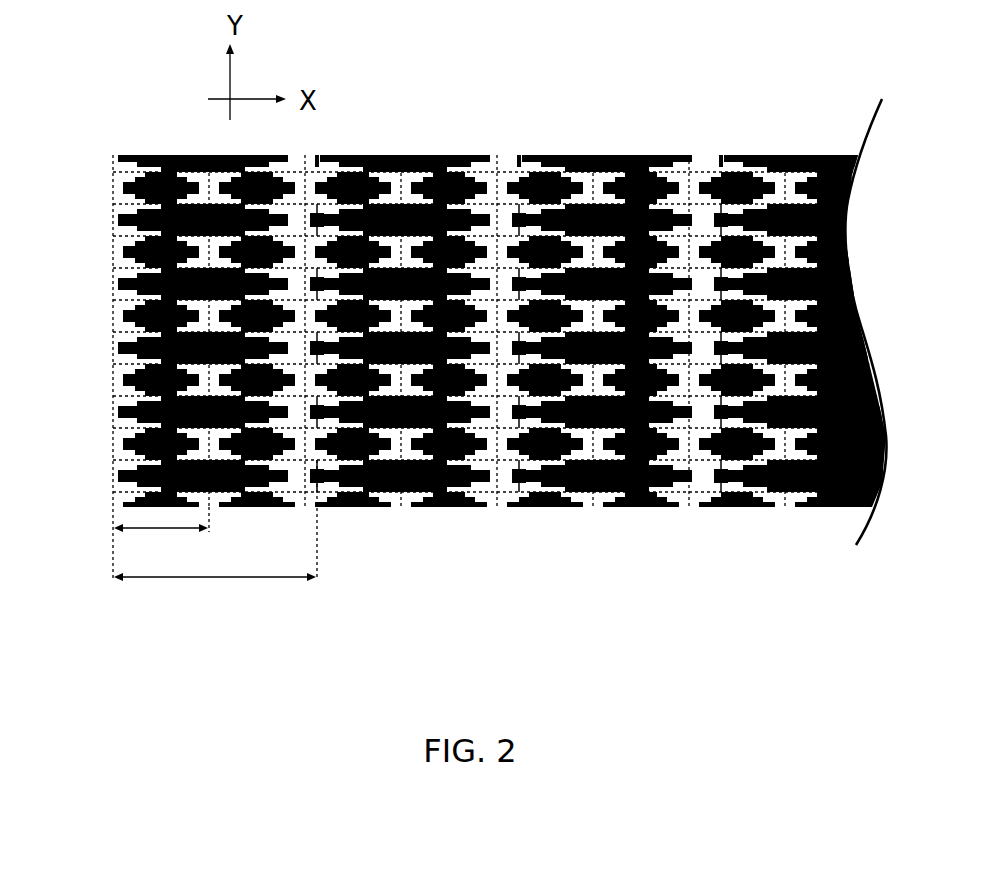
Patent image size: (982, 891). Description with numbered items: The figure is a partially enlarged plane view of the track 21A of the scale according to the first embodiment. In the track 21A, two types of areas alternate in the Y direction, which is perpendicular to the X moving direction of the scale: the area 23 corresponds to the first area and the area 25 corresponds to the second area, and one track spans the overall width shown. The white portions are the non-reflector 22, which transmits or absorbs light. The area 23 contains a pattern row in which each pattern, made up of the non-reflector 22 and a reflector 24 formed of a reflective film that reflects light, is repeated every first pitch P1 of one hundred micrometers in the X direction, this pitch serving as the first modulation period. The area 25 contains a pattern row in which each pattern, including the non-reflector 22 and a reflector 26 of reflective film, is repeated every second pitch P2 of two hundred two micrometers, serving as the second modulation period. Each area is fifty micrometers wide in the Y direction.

The track 21A is at (536, 43).
The non-reflector 22 is at (694, 186).
The area 23 is at (464, 348).
The reflector 24 is at (285, 185).
The area 25 is at (476, 316).
The reflector 26 is at (402, 497).
The first pitch P1 is at (161, 537).
The second pitch P2 is at (215, 538).